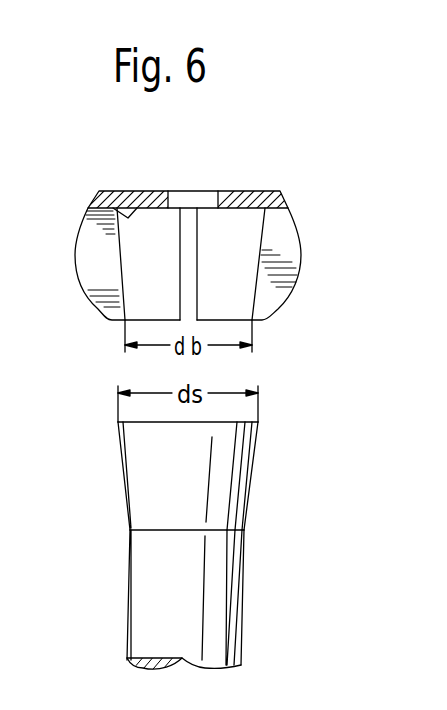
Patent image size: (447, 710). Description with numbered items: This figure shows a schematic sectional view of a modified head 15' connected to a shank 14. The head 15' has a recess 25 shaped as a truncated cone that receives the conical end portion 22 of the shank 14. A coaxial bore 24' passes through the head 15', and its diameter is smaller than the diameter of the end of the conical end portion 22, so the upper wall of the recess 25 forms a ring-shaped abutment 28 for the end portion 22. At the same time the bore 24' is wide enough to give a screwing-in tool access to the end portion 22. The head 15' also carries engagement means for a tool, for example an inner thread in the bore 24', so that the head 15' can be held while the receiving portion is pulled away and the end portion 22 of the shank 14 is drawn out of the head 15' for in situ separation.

The ring-shaped abutment 28 is at (118, 192).
The coaxial bore 24' is at (212, 169).
The head 15' is at (236, 255).
The recess 25 is at (120, 273).
The end portion 22 is at (251, 458).
The shank 14 is at (236, 609).